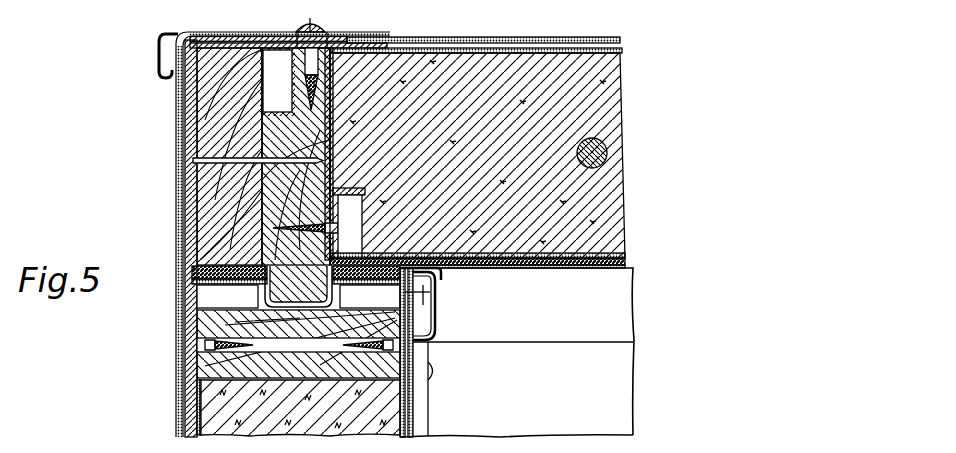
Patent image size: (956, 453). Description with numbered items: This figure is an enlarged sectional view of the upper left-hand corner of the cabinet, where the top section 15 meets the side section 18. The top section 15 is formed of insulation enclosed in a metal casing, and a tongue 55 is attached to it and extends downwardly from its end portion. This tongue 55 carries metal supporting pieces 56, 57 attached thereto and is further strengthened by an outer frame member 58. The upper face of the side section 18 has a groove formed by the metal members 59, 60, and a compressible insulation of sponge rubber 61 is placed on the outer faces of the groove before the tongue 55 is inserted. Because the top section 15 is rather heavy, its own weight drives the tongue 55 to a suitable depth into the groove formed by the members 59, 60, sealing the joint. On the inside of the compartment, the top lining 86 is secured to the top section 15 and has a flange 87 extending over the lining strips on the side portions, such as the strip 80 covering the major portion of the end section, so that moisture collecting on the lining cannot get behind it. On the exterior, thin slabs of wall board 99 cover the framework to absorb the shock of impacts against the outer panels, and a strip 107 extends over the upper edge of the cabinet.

The top section 15 is at (470, 55).
The side section 18 is at (205, 408).
The tongue 55 is at (603, 152).
The metal supporting piece 56 is at (289, 44).
The metal supporting piece 57 is at (458, 267).
The outer frame member 58 is at (197, 105).
The metal member 59 is at (420, 303).
The metal member 60 is at (180, 298).
The sponge rubber 61 is at (430, 270).
The strip 80 is at (415, 423).
The top lining 86 is at (562, 268).
The flange 87 is at (560, 338).
The wall board 99 is at (185, 345).
The strip 107 is at (166, 39).